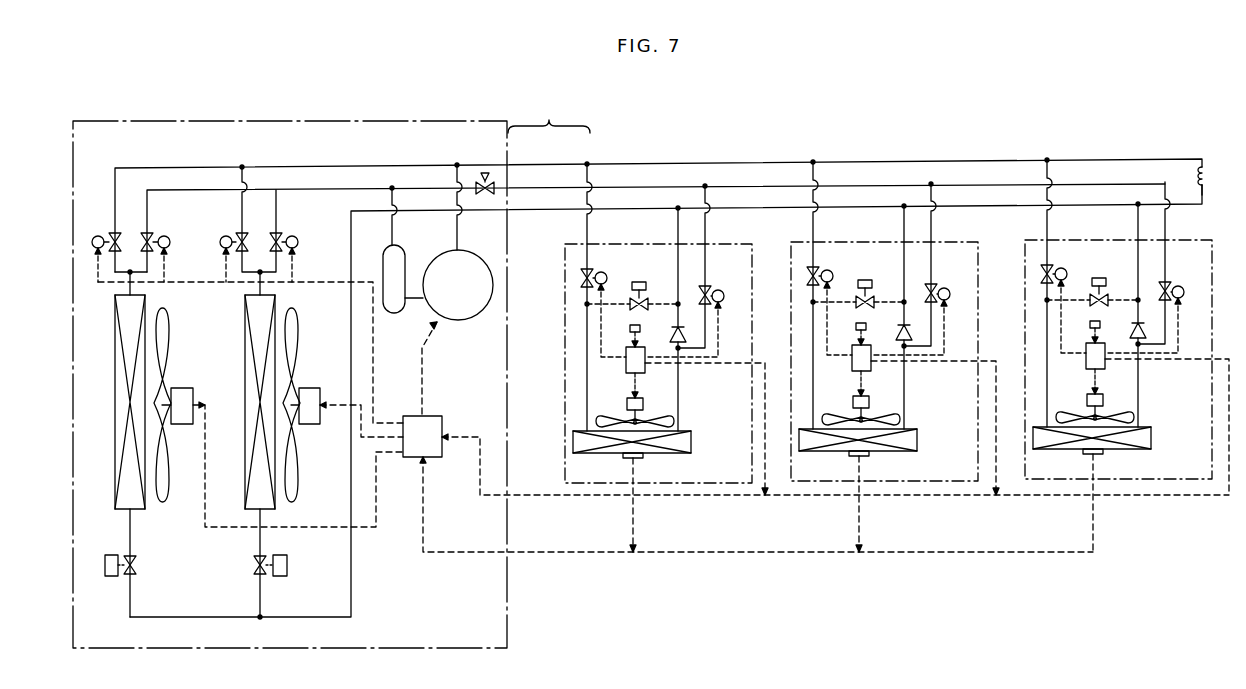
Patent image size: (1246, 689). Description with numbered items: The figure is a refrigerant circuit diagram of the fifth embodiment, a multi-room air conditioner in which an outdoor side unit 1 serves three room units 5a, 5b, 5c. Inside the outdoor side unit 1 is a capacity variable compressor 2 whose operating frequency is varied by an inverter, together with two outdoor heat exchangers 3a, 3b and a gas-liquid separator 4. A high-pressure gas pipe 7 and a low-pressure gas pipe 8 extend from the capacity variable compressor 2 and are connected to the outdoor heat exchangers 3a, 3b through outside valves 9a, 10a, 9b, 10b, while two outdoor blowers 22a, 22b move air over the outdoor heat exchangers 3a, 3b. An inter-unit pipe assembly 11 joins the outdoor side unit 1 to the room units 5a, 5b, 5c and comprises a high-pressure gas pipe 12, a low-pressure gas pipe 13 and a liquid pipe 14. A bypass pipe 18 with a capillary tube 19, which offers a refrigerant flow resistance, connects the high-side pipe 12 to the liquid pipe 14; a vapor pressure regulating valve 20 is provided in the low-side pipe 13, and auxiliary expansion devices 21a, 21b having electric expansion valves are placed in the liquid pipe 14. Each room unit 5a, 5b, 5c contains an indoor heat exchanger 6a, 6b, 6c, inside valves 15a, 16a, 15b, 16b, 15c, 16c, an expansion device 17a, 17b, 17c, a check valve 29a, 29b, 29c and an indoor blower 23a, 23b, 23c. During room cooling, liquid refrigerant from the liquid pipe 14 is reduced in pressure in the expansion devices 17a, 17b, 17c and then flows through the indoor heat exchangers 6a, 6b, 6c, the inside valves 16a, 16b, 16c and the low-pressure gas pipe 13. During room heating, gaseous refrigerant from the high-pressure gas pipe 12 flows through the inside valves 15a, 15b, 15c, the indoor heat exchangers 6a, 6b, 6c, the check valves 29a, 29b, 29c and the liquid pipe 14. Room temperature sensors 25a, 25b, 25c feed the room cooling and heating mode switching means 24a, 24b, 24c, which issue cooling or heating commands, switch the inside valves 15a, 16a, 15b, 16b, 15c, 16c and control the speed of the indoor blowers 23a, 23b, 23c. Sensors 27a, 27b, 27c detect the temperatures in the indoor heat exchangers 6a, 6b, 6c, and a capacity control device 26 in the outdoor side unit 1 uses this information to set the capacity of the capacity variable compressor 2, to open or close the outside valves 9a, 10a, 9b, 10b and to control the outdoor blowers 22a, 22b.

The outdoor side unit 1 is at (509, 602).
The capacity variable compressor 2 is at (459, 320).
The outdoor heat exchanger 3a is at (115, 481).
The outdoor heat exchanger 3b is at (247, 481).
The gas-liquid separator 4 is at (394, 313).
The room unit 5a is at (736, 244).
The room unit 5b is at (896, 349).
The room unit 5c is at (1129, 347).
The indoor heat exchanger 6a is at (681, 453).
The indoor heat exchanger 6b is at (875, 454).
The indoor heat exchanger 6c is at (1108, 452).
The high-pressure gas pipe 7 is at (461, 231).
The low-pressure gas pipe 8 is at (397, 231).
The outside valve 9a is at (98, 236).
The outside valve 9b is at (226, 236).
The outside valve 10a is at (164, 236).
The outside valve 10b is at (292, 236).
The inter-unit pipe assembly 11 is at (549, 115).
The high-pressure gas pipe 12 is at (521, 164).
The low-pressure gas pipe 13 is at (540, 187).
The liquid pipe 14 is at (557, 209).
The inside valve 15a is at (589, 271).
The inside valve 15b is at (830, 286).
The inside valve 15c is at (1064, 284).
The inside valve 16a is at (718, 290).
The inside valve 16b is at (920, 303).
The inside valve 16c is at (1153, 301).
The expansion device 17a is at (639, 282).
The expansion device 17b is at (858, 279).
The expansion device 17c is at (1092, 277).
The bypass pipe 18 is at (1206, 192).
The capillary tube 19 is at (1209, 172).
The vapor pressure regulating valve 20 is at (482, 173).
The auxiliary expansion device 21a is at (135, 570).
The auxiliary expansion device 21b is at (287, 572).
The outdoor blower 22a is at (183, 388).
The outdoor blower 22b is at (310, 388).
The indoor blower 23a is at (675, 421).
The indoor blower 23b is at (889, 410).
The indoor blower 23c is at (1123, 408).
The room cooling and heating mode switching means 24a is at (626, 372).
The room cooling and heating mode switching means 24b is at (843, 371).
The room cooling and heating mode switching means 24c is at (1077, 369).
The room temperature sensor 25a is at (630, 329).
The room temperature sensor 25b is at (802, 330).
The room temperature sensor 25c is at (1036, 328).
The capacity control device 26 is at (434, 458).
The sensor 27a is at (618, 458).
The sensor 27b is at (832, 465).
The sensor 27c is at (1066, 463).
The check valve 29a is at (684, 337).
The check valve 29b is at (926, 361).
The check valve 29c is at (1160, 359).